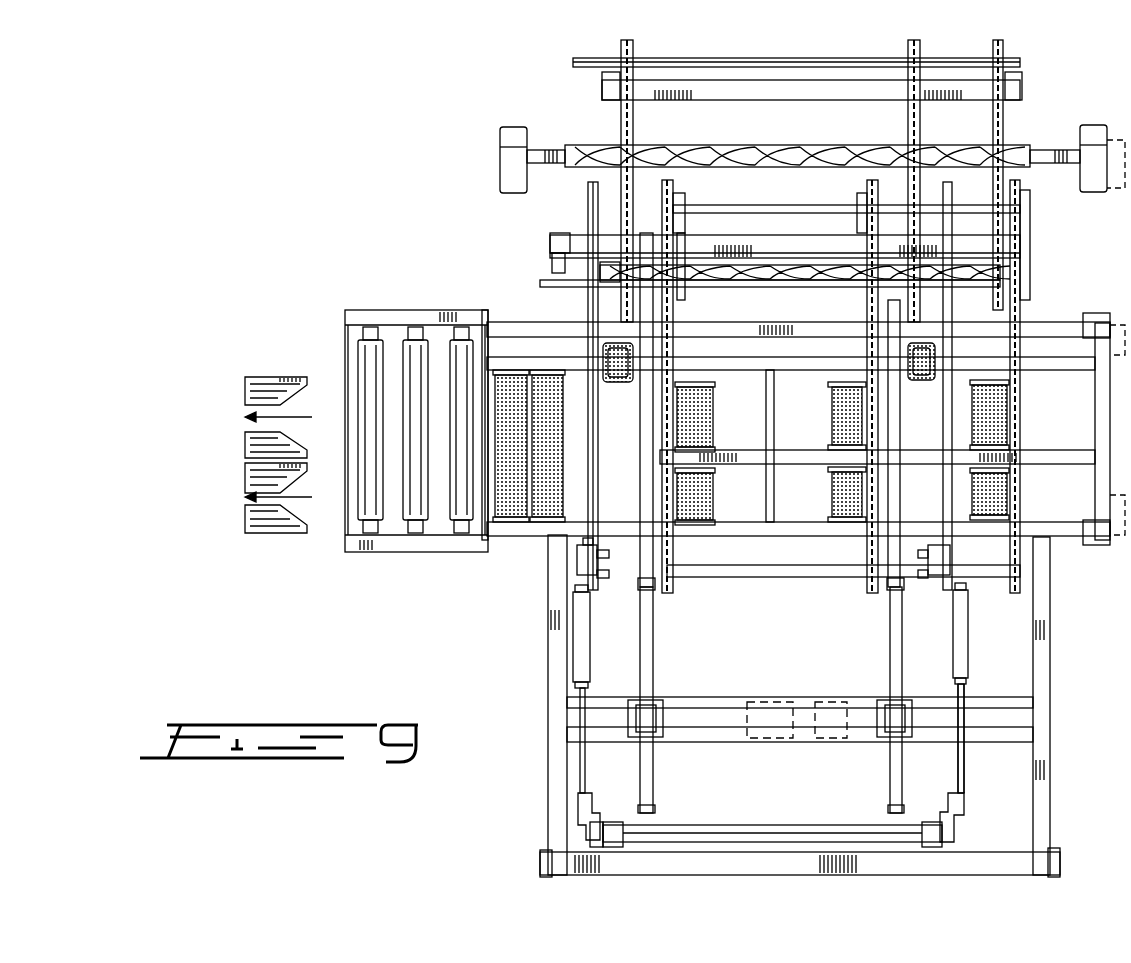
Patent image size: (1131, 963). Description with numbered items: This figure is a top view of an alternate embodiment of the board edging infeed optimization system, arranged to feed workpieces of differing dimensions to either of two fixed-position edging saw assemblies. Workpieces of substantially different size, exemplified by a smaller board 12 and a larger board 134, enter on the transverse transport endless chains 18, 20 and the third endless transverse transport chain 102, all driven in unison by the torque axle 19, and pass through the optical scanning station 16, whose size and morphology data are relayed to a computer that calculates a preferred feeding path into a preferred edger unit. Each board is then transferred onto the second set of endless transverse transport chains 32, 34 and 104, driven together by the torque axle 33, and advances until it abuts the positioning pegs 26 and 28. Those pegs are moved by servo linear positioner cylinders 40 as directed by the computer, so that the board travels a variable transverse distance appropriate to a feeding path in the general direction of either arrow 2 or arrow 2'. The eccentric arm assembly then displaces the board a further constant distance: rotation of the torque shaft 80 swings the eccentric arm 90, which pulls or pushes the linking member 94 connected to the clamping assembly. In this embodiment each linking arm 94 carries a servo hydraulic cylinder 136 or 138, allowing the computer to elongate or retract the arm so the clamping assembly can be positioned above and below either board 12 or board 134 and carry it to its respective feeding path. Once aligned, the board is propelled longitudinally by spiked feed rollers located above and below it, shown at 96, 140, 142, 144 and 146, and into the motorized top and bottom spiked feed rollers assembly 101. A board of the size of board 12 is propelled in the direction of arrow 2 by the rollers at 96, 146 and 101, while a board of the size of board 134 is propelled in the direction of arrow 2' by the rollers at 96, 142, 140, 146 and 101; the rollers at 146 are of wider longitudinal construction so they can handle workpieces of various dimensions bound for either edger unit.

The transverse transport endless chain 18 is at (633, 62).
The torque axle 19 is at (803, 68).
The transverse transport endless chain 20 is at (920, 55).
The third endless transverse transport chain 102 is at (1003, 58).
The board 134 is at (1022, 148).
The optical scanning station 16 is at (500, 162).
The endless transverse transport chain 32 is at (673, 192).
The torque axle 33 is at (742, 206).
The endless transverse transport chain 34 is at (867, 188).
The endless transverse transport chain 104 is at (1022, 192).
The board 12 is at (822, 278).
The positioning peg 26 is at (675, 365).
The positioning peg 28 is at (895, 368).
The motorized top and bottom spiked feed rollers assembly 101 is at (393, 378).
The arrow 2' is at (289, 417).
The arrow 2 is at (287, 498).
The spiked feed rollers 140 is at (832, 418).
The spiked feed rollers 142 is at (1008, 422).
The spiked feed rollers 96 is at (832, 490).
The spiked feed rollers 144 is at (1007, 495).
The spiked feed rollers 146 is at (542, 520).
The servo hydraulic cylinder 136 is at (578, 625).
The servo hydraulic cylinder 138 is at (965, 622).
The servo linear positioner cylinder 40 is at (650, 752).
The linking member 94 is at (963, 722).
The torque shaft 80 is at (742, 830).
The eccentric arm 90 is at (950, 808).